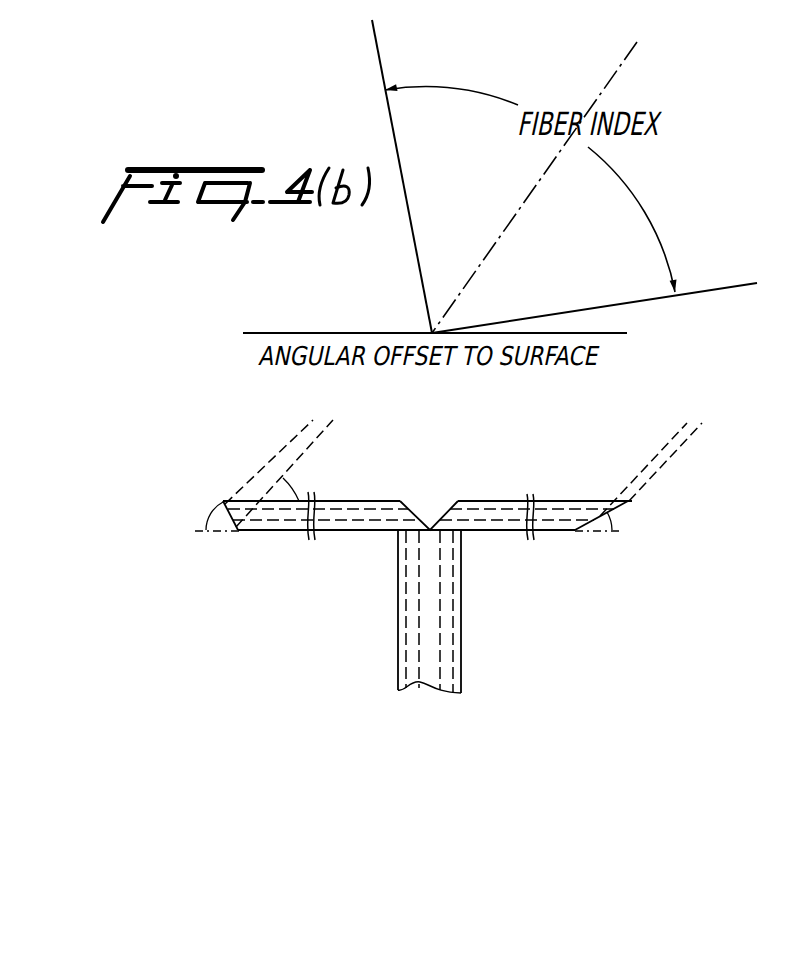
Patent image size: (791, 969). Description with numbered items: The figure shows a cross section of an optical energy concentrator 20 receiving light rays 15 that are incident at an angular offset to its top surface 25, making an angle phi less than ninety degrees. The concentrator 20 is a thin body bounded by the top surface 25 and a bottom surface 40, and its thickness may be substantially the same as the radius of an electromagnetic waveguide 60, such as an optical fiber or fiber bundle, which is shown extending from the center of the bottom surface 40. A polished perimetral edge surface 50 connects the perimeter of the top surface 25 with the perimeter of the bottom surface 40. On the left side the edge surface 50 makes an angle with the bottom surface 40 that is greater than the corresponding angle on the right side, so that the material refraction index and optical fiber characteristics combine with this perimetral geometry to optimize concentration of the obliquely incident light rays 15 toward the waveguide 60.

The light rays 15 is at (267, 446).
The optical energy concentrator 20 is at (567, 484).
The top surface 25 is at (348, 500).
The bottom surface 40 is at (276, 532).
The polished perimetral edge surface 50 is at (226, 502).
The electromagnetic waveguide 60 is at (458, 613).